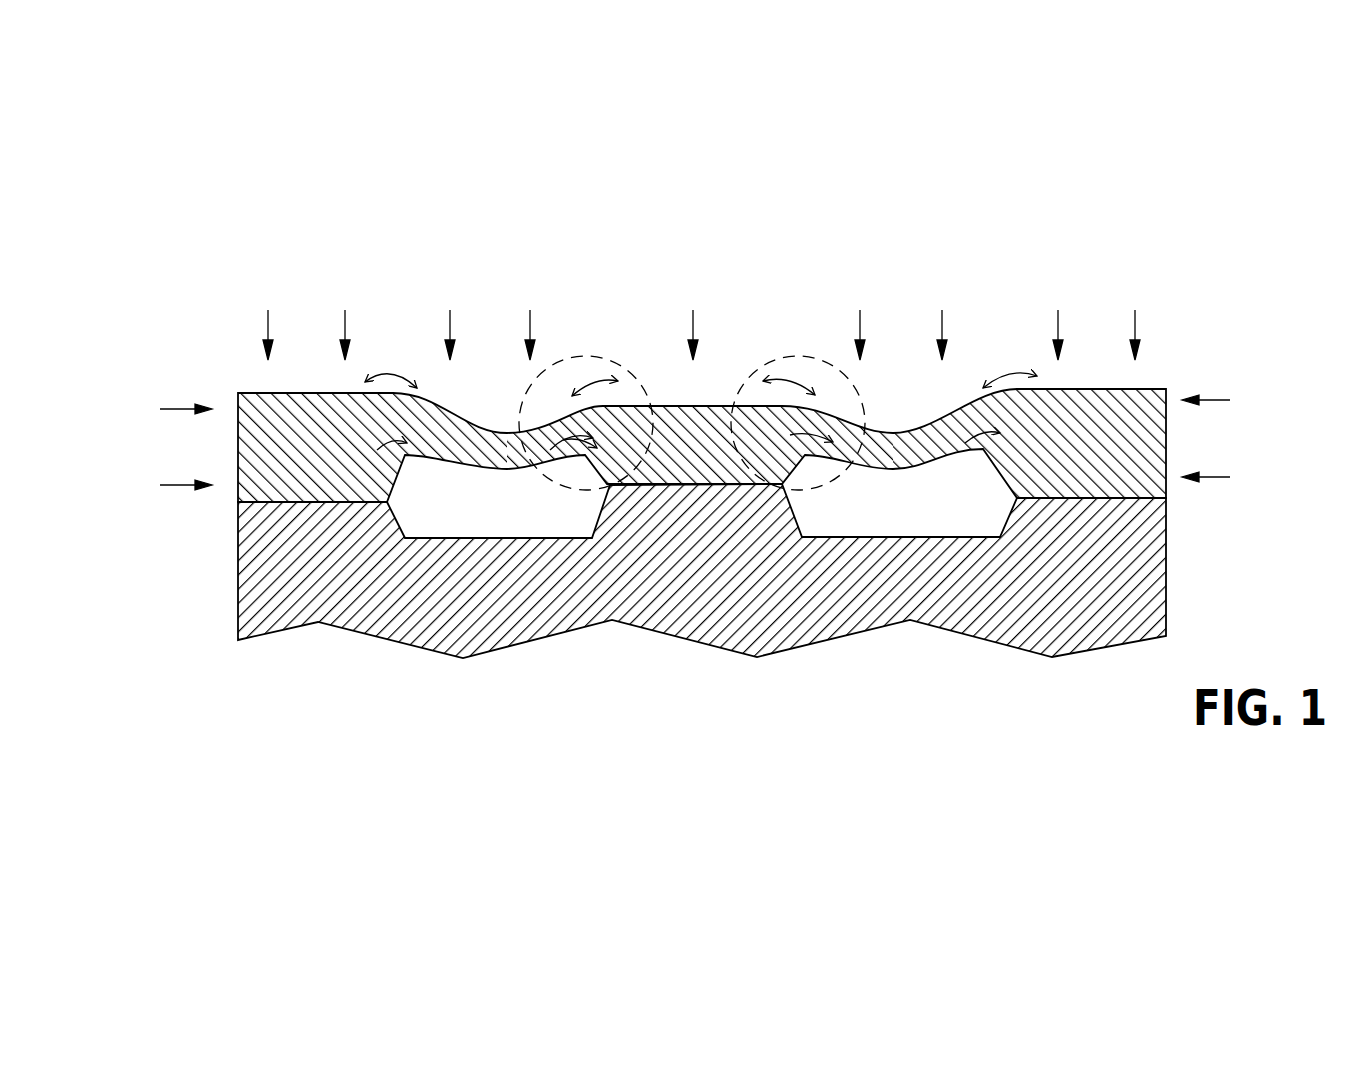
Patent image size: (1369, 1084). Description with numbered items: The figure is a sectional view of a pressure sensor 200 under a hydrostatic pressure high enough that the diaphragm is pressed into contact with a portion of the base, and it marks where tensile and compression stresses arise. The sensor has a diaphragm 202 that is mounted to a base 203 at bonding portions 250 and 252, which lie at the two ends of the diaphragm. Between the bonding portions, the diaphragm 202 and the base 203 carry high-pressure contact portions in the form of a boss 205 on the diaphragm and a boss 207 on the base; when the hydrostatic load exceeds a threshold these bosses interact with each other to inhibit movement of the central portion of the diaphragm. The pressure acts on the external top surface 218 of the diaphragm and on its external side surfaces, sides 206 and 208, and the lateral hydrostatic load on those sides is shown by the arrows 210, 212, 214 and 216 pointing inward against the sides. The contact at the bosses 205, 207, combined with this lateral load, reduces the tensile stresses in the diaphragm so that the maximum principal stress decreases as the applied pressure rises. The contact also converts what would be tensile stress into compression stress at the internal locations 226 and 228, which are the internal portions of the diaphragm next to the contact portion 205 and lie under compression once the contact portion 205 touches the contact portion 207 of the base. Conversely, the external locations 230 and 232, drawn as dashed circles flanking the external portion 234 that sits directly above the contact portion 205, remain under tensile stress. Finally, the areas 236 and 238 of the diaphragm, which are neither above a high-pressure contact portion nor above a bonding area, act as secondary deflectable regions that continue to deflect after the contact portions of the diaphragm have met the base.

The pressure sensor 200 is at (1185, 377).
The diaphragm 202 is at (1072, 400).
The base 203 is at (252, 605).
The boss 205 is at (688, 480).
The side 206 is at (238, 467).
The boss 207 is at (733, 500).
The side 208 is at (1166, 452).
The arrow 210 is at (160, 485).
The arrow 212 is at (160, 409).
The arrow 214 is at (1230, 477).
The arrow 216 is at (1230, 400).
The external top surface 218 is at (745, 465).
The internal portion 226 is at (582, 452).
The internal portion 228 is at (805, 450).
The external location 230 is at (600, 395).
The external location 232 is at (785, 395).
The external portion 234 is at (676, 405).
The area 236 is at (491, 430).
The area 238 is at (893, 432).
The bonding portion 250 is at (322, 493).
The bonding portion 252 is at (1093, 495).